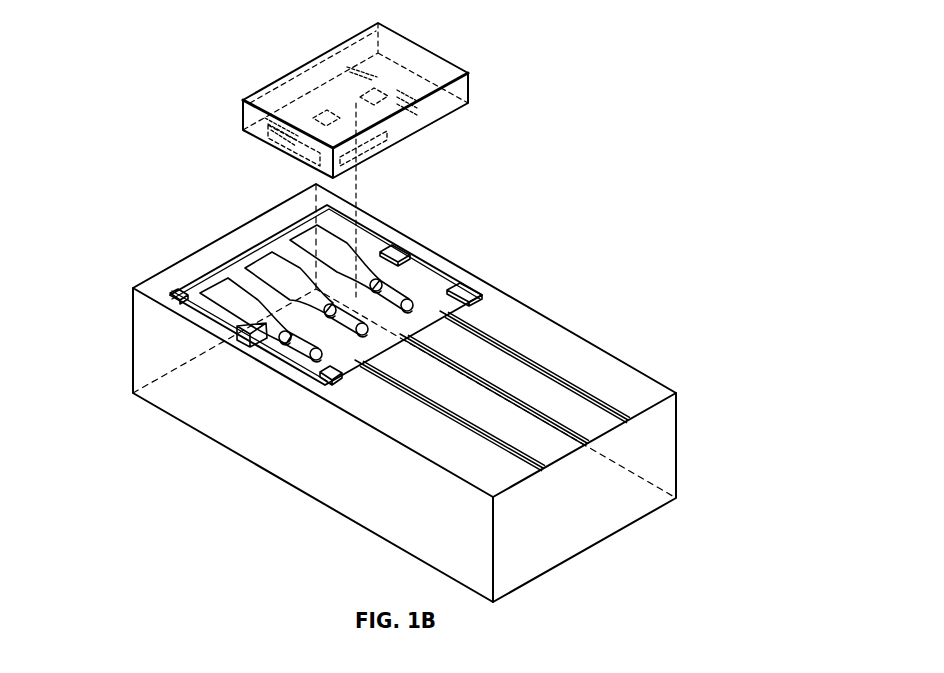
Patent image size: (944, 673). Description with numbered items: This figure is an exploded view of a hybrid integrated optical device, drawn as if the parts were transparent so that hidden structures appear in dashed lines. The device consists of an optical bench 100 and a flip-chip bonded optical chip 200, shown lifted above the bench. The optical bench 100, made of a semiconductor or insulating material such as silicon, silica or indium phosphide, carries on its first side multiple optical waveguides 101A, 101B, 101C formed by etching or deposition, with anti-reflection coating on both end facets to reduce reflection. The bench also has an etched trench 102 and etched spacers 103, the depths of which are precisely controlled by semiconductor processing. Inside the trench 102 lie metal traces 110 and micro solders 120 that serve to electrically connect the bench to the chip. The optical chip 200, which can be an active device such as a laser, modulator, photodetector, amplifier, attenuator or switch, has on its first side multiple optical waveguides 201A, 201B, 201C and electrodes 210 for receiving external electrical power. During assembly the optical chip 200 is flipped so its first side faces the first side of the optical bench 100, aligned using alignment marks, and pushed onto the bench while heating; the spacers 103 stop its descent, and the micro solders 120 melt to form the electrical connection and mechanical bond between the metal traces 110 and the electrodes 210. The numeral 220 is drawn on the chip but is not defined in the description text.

The optical bench 100 is at (517, 300).
The optical waveguide 101A is at (512, 345).
The optical waveguide 101B is at (515, 398).
The optical waveguide 101C is at (515, 453).
The trench 102 is at (267, 333).
The spacer 103 is at (320, 377).
The metal trace 110 is at (220, 293).
The micro solder 120 is at (250, 330).
The optical chip 200 is at (438, 64).
The optical waveguide 201A is at (448, 118).
The optical waveguide 201B is at (403, 147).
The optical waveguide 201C is at (357, 167).
The electrode 210 is at (289, 145).
The top layer 220 is at (288, 92).